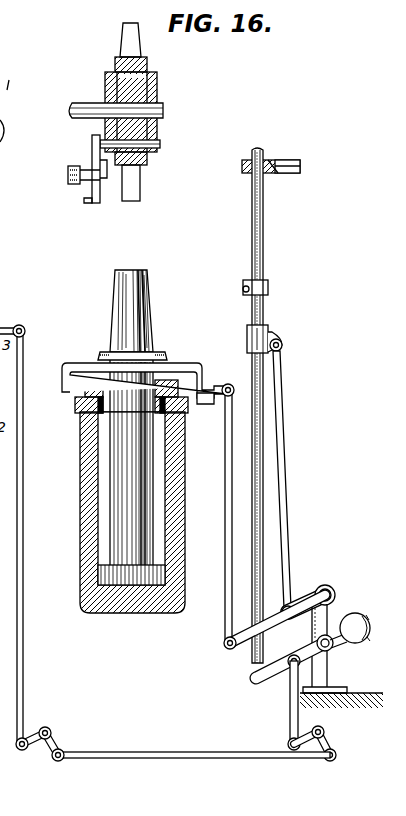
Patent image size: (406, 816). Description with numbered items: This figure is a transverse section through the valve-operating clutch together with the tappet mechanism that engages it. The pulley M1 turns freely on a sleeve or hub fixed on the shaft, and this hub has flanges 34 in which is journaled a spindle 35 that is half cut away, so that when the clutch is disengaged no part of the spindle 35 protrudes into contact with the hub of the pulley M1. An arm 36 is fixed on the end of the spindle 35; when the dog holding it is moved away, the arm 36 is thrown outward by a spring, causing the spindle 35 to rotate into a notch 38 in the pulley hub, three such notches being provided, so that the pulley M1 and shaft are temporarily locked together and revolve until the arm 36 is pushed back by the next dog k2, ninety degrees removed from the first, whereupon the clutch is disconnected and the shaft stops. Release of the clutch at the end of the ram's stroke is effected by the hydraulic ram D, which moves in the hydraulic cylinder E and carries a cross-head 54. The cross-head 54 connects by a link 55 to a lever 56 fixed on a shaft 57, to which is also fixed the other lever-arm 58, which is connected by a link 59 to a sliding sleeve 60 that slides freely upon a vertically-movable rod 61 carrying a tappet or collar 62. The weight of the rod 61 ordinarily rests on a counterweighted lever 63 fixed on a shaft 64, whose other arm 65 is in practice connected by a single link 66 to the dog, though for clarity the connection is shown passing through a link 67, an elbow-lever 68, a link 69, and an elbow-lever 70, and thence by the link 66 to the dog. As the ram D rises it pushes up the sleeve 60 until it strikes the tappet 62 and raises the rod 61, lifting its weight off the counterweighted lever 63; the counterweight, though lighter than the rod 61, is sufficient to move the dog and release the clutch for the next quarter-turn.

The notch 38 is at (134, 76).
The flanges 34 is at (105, 123).
The spindle 35 is at (160, 144).
The arm 36 is at (95, 152).
The dog k2 is at (107, 195).
The pulley M1 is at (143, 165).
The hydraulic ram D is at (118, 327).
The hydraulic cylinder E is at (110, 520).
The cross-head 54 is at (183, 372).
The link 55 is at (228, 540).
The lever 56 is at (277, 622).
The shaft 57 is at (330, 587).
The lever-arm 58 is at (305, 595).
The link 59 is at (284, 487).
The sliding sleeve 60 is at (270, 335).
The vertically-movable rod 61 is at (252, 232).
The tappet 62 is at (245, 282).
The counterweighted lever 63 is at (279, 679).
The shaft 64 is at (337, 647).
The arm 65 is at (307, 660).
The link 66 is at (22, 625).
The link 67 is at (291, 728).
The elbow-lever 68 is at (338, 738).
The link 69 is at (157, 757).
The elbow-lever 70 is at (45, 740).